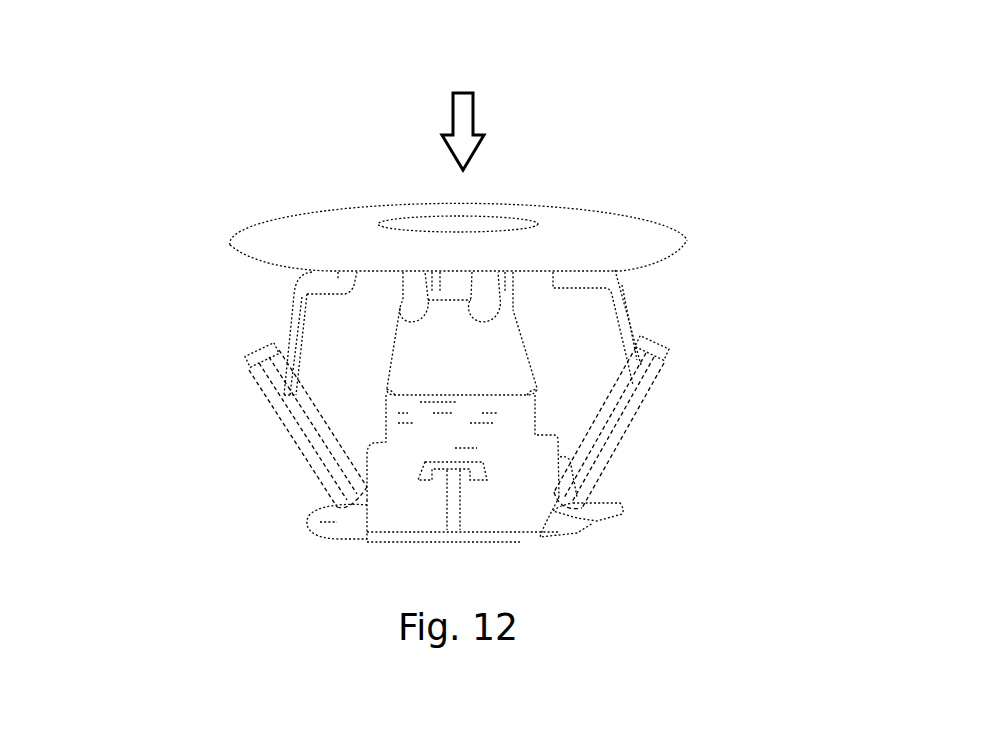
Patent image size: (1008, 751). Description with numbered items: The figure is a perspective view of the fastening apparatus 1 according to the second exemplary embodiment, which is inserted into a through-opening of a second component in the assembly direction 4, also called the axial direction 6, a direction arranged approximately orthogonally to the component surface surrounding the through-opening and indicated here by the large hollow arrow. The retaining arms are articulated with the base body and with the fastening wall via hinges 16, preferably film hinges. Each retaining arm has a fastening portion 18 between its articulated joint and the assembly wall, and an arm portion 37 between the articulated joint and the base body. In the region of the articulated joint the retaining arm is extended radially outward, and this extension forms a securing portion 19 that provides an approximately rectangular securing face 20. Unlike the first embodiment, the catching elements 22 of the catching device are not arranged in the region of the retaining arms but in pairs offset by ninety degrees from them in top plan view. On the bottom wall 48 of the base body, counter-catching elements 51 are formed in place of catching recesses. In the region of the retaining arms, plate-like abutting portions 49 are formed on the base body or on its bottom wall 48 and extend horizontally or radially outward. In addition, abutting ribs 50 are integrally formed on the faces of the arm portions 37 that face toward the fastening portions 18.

The fastening apparatus 1 is at (781, 91).
The assembly direction 4 is at (453, 107).
The axial direction 6 is at (463, 131).
The hinge 16 is at (618, 280).
The fastening portion 18 is at (290, 313).
The securing portion 19 is at (253, 361).
The securing face 20 is at (265, 345).
The catching element 22 is at (490, 300).
The arm portion 37 is at (293, 427).
The bottom wall 48 is at (423, 537).
The abutting portion 49 is at (315, 533).
The abutting rib 50 is at (322, 427).
The counter-catching element 51 is at (477, 478).